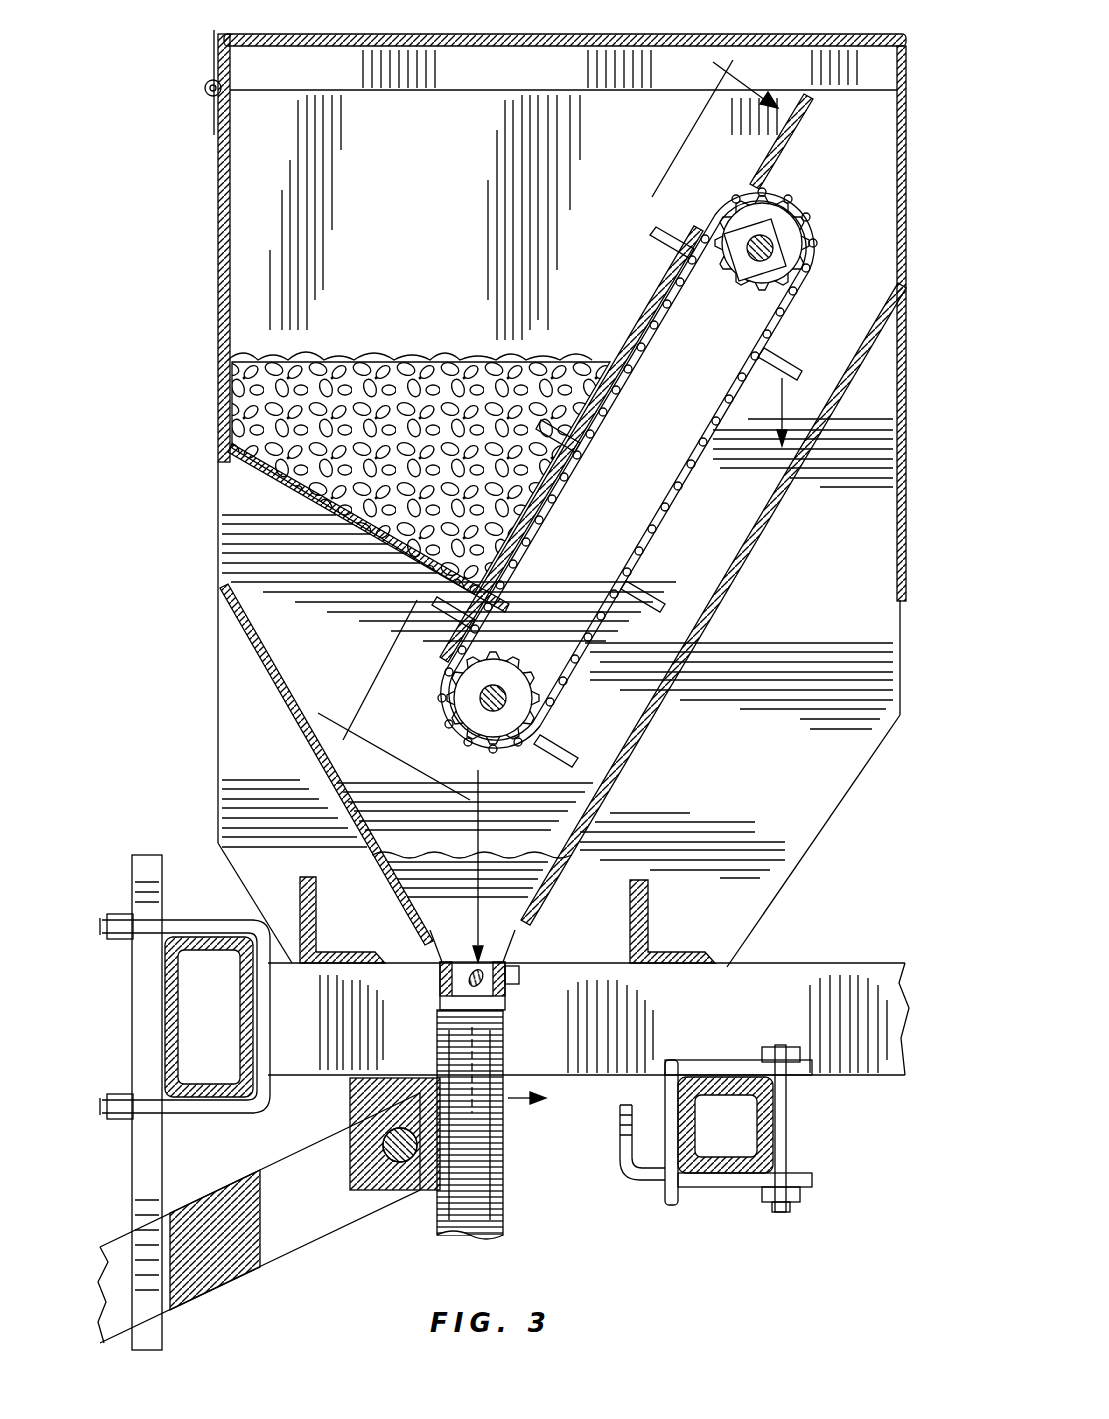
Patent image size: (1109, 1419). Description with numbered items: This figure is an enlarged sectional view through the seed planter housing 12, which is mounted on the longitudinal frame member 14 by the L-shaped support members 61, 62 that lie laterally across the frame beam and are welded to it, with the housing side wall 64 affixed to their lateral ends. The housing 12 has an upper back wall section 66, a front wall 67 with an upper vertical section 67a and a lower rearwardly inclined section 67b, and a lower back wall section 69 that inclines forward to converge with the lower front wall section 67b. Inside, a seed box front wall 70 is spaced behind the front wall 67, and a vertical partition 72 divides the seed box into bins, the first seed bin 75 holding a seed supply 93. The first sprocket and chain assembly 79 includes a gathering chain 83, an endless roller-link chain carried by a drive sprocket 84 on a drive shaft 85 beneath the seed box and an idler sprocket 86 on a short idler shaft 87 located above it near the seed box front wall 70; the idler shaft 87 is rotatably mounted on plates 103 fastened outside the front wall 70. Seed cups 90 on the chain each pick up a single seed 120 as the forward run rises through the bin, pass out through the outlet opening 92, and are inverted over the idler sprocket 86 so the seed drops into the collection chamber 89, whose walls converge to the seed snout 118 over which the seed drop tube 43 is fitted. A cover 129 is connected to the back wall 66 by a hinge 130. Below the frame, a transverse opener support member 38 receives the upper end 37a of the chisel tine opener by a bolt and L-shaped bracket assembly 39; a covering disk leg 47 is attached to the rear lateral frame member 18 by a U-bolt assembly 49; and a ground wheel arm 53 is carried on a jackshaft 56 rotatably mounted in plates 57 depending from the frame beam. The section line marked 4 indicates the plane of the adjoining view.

The section line 4- 4 is at (625, 592).
The seed planter housing 12 is at (210, 374).
The longitudinal frame member 14 is at (888, 965).
The rear lateral frame member 18 is at (232, 930).
The upper end of chisel tine opener 37a is at (620, 1150).
The transverse opener support member 38 is at (730, 1178).
The bolt and L-shaped bracket assembly 39 is at (792, 1200).
The seed drop tube 43 is at (505, 1222).
The covering disk leg 47 is at (160, 1200).
The U-bolt assembly 49 is at (140, 878).
The ground wheel arm 53 is at (283, 1230).
The jackshaft 56 is at (405, 1175).
The plate 57 is at (356, 1096).
The L-shaped support member 61 is at (648, 922).
The L-shaped support member 62 is at (317, 928).
The housing side wall 64 is at (865, 712).
The upper back wall section 66 is at (218, 190).
The front wall 67 is at (862, 413).
The upper vertical section 67a is at (905, 178).
The lower rearwardly inclined section 67b is at (700, 648).
The lower back wall section 69 is at (245, 660).
The seed box front wall 70 is at (800, 128).
The vertical partition 72 is at (258, 270).
The first seed bin 75 is at (416, 174).
The first sprocket and chain assembly 79 is at (610, 730).
The gathering chain 83 is at (612, 628).
The drive sprocket 84 is at (480, 672).
The drive shaft 85 is at (480, 706).
The idler sprocket 86 is at (770, 212).
The idler shaft 87 is at (770, 258).
The collection chamber 89 is at (820, 372).
The seed cup 90 is at (575, 372).
The outlet opening 92 is at (763, 172).
The seed supply 93 is at (425, 348).
The plate 103 is at (788, 252).
The seed snout 118 is at (438, 988).
The seed 120 is at (693, 220).
The cover 129 is at (250, 58).
The hinge 130 is at (205, 92).